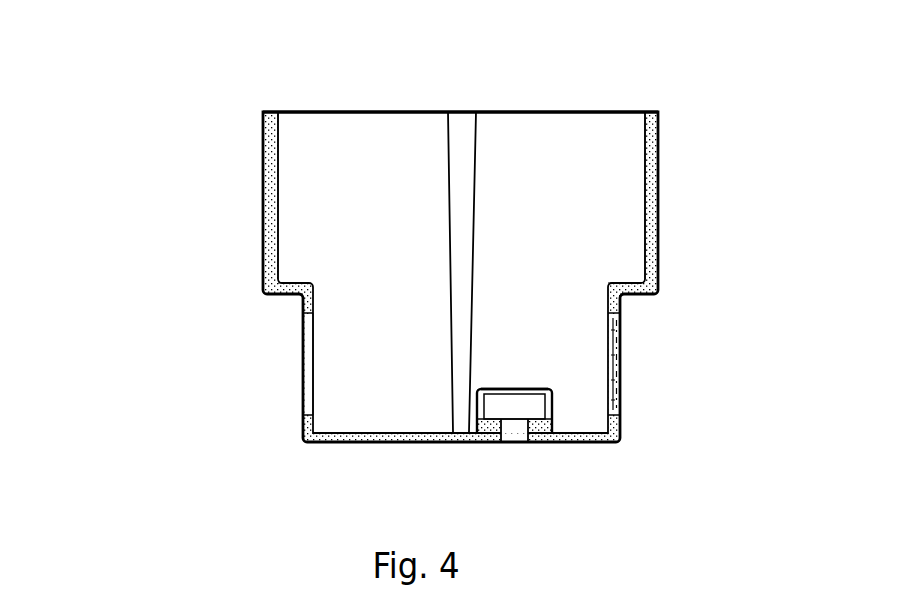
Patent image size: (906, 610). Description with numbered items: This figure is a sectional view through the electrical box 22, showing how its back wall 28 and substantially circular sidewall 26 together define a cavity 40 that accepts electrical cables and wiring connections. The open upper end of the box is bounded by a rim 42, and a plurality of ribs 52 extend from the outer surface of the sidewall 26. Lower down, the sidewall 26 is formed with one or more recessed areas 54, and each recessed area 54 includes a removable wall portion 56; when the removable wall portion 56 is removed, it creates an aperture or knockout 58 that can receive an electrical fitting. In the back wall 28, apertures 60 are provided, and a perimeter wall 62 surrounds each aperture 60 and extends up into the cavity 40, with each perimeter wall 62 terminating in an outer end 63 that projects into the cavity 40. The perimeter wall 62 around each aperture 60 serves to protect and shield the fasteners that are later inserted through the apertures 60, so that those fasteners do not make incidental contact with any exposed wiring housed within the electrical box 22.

The electrical box 22 is at (153, 127).
The sidewall 26 is at (652, 153).
The back wall 28 is at (402, 433).
The cavity 40 is at (380, 147).
The rim 42 is at (529, 112).
The ribs 52 is at (263, 240).
The recessed areas 54 is at (258, 345).
The removable wall portion 56 is at (620, 365).
The knockout 58 is at (308, 365).
The apertures 60 is at (515, 433).
The perimeter wall 62 is at (478, 412).
The outer end 63 is at (515, 390).